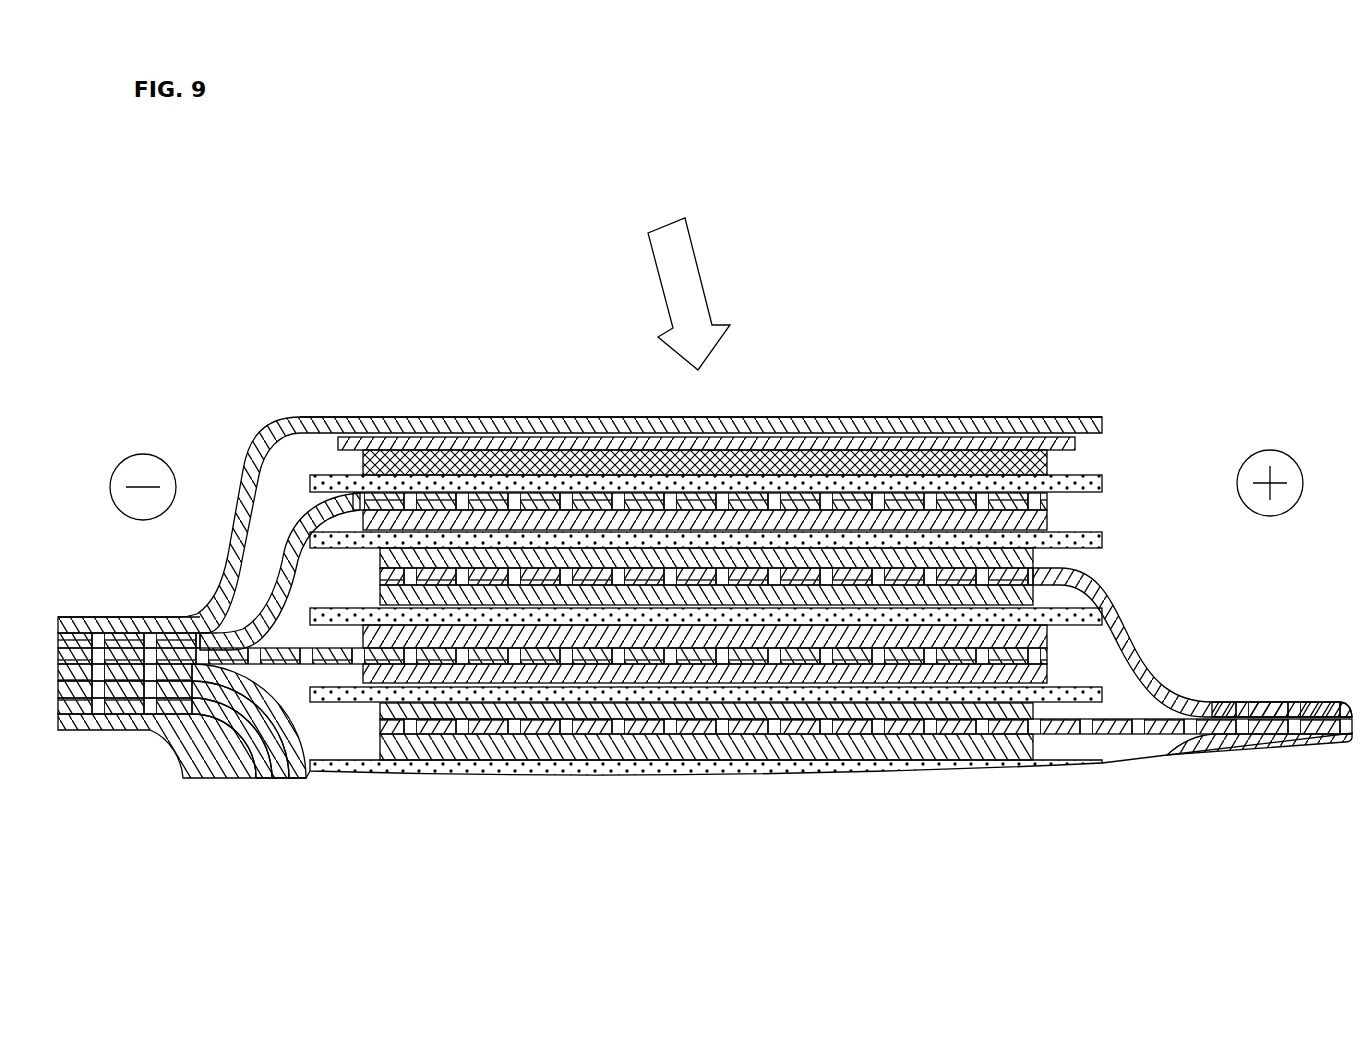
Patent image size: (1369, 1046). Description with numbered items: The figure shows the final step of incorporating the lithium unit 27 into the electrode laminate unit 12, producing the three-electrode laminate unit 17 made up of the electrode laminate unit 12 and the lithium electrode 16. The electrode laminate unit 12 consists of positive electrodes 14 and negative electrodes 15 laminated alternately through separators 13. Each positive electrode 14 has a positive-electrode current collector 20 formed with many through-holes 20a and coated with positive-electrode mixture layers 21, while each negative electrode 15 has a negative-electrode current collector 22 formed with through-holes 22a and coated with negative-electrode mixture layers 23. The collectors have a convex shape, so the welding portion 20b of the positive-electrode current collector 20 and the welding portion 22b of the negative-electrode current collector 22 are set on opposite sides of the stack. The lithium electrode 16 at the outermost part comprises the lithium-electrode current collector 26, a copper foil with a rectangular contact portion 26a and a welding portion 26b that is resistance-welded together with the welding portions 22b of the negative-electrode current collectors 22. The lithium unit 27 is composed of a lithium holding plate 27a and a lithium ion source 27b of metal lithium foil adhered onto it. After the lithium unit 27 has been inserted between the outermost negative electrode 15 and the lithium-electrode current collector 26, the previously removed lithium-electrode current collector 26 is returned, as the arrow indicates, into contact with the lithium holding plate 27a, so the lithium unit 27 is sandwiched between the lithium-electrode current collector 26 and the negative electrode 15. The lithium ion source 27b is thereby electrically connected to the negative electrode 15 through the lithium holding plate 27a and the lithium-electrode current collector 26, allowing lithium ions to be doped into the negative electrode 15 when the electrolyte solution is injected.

The electrode laminate unit 12 is at (1171, 626).
The separator 13 is at (1090, 536).
The positive electrode 14 is at (378, 387).
The negative electrode 15 is at (937, 387).
The lithium electrode 16 is at (1054, 418).
The three-electrode laminate unit 17 is at (1037, 294).
The positive-electrode current collector 20 is at (452, 575).
The through-holes 20a is at (530, 575).
The welding portion 20b is at (1318, 702).
The positive-electrode mixture layer 21 is at (405, 597).
The negative-electrode current collector 22 is at (943, 500).
The through-holes 22a is at (767, 500).
The welding portion 22b is at (66, 732).
The negative-electrode mixture layer 23 is at (987, 515).
The lithium-electrode current collector 26 is at (601, 418).
The contact portion 26a is at (570, 417).
The welding portion 26b is at (115, 617).
The lithium unit 27 is at (1180, 417).
The lithium holding plate 27a is at (1072, 443).
The lithium ion source 27b is at (1048, 462).